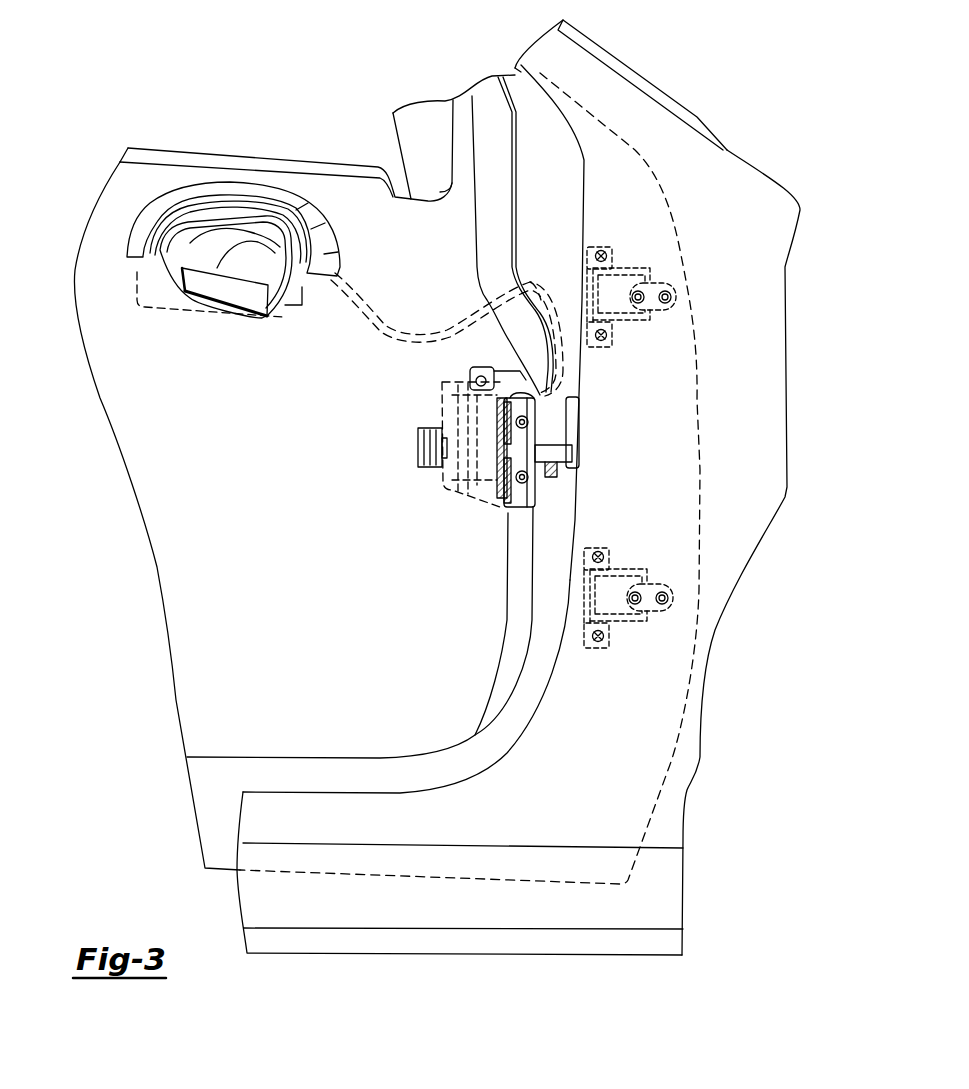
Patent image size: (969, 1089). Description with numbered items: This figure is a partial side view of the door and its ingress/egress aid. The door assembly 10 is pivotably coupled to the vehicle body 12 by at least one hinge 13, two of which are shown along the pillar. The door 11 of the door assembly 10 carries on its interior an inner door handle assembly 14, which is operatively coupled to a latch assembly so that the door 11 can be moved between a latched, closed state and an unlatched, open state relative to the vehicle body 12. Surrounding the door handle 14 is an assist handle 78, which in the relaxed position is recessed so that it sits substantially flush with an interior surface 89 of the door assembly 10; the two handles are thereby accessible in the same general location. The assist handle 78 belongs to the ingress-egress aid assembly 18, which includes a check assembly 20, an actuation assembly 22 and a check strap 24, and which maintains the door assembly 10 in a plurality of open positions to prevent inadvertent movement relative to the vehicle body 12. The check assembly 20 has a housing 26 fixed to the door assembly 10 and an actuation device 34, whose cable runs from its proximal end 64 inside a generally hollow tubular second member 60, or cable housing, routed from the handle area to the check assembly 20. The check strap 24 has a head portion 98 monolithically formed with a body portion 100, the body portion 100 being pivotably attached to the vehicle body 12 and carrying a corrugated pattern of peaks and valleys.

The door assembly 10 is at (188, 142).
The door 11 is at (190, 557).
The vehicle body 12 is at (730, 145).
The hinge 13 is at (652, 345).
The inner door handle assembly 14 is at (165, 290).
The ingress-egress aid assembly 18 is at (292, 188).
The check assembly 20 is at (480, 468).
The actuation assembly 22 is at (138, 205).
The check strap 24 is at (552, 478).
The housing 26 is at (470, 363).
The actuation device 34 is at (355, 318).
The second member 60 is at (423, 328).
The proximal end 64 is at (455, 390).
The assist handle 78 is at (247, 197).
The interior surface 89 is at (380, 252).
The head portion 98 is at (413, 460).
The body portion 100 is at (545, 438).